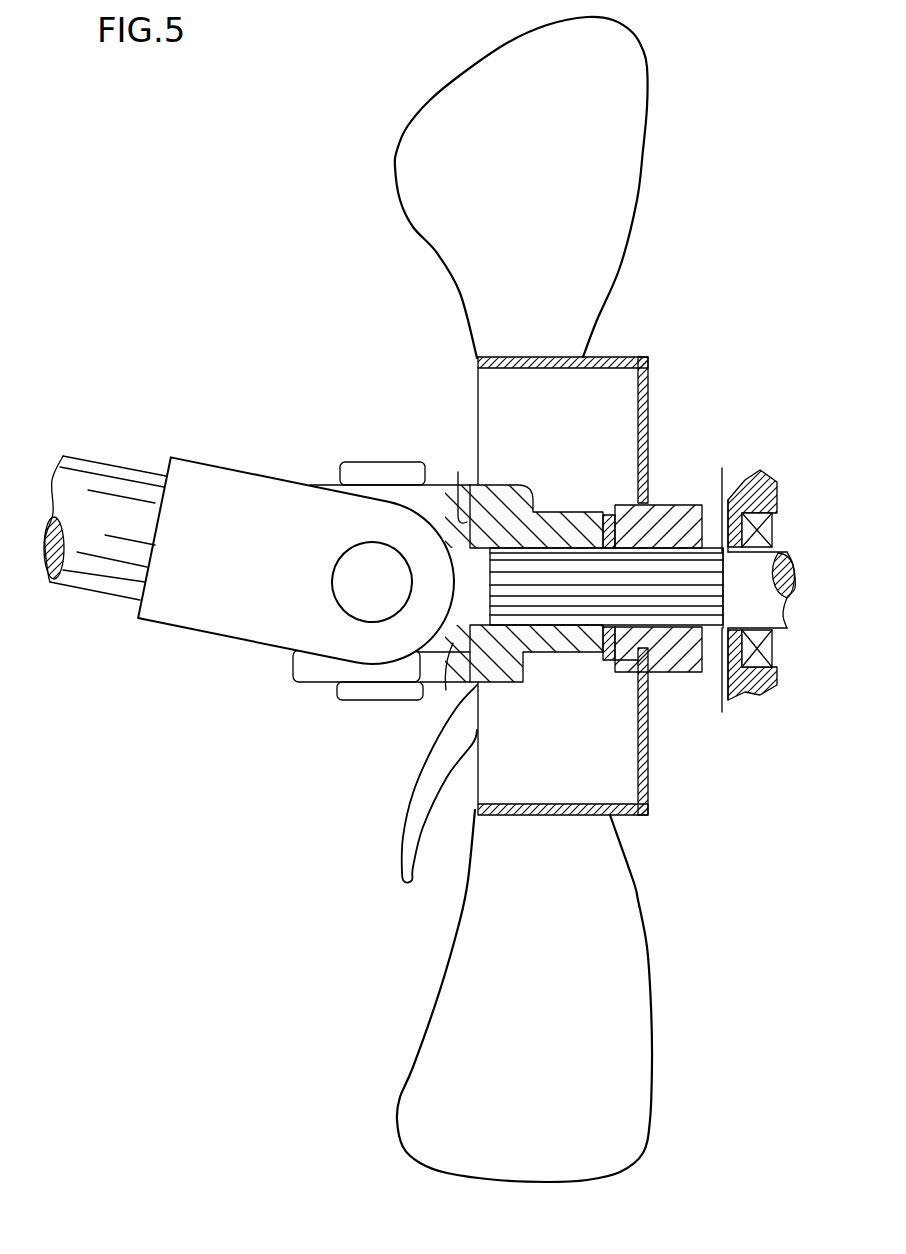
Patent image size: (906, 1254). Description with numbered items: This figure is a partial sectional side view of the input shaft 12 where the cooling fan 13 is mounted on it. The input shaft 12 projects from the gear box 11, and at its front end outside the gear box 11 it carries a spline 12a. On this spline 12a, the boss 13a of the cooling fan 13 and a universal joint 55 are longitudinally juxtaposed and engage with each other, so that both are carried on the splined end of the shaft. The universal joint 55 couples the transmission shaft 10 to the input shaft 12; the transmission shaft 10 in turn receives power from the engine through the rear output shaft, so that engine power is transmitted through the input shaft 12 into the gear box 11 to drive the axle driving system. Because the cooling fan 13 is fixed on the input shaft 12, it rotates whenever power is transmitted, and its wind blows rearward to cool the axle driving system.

The transmission shaft 10 is at (103, 470).
The gear box 11 is at (745, 670).
The input shaft 12 is at (790, 567).
The spline 12a is at (722, 530).
The cooling fan 13 is at (647, 142).
The boss 13a is at (672, 505).
The universal joint 55 is at (356, 462).